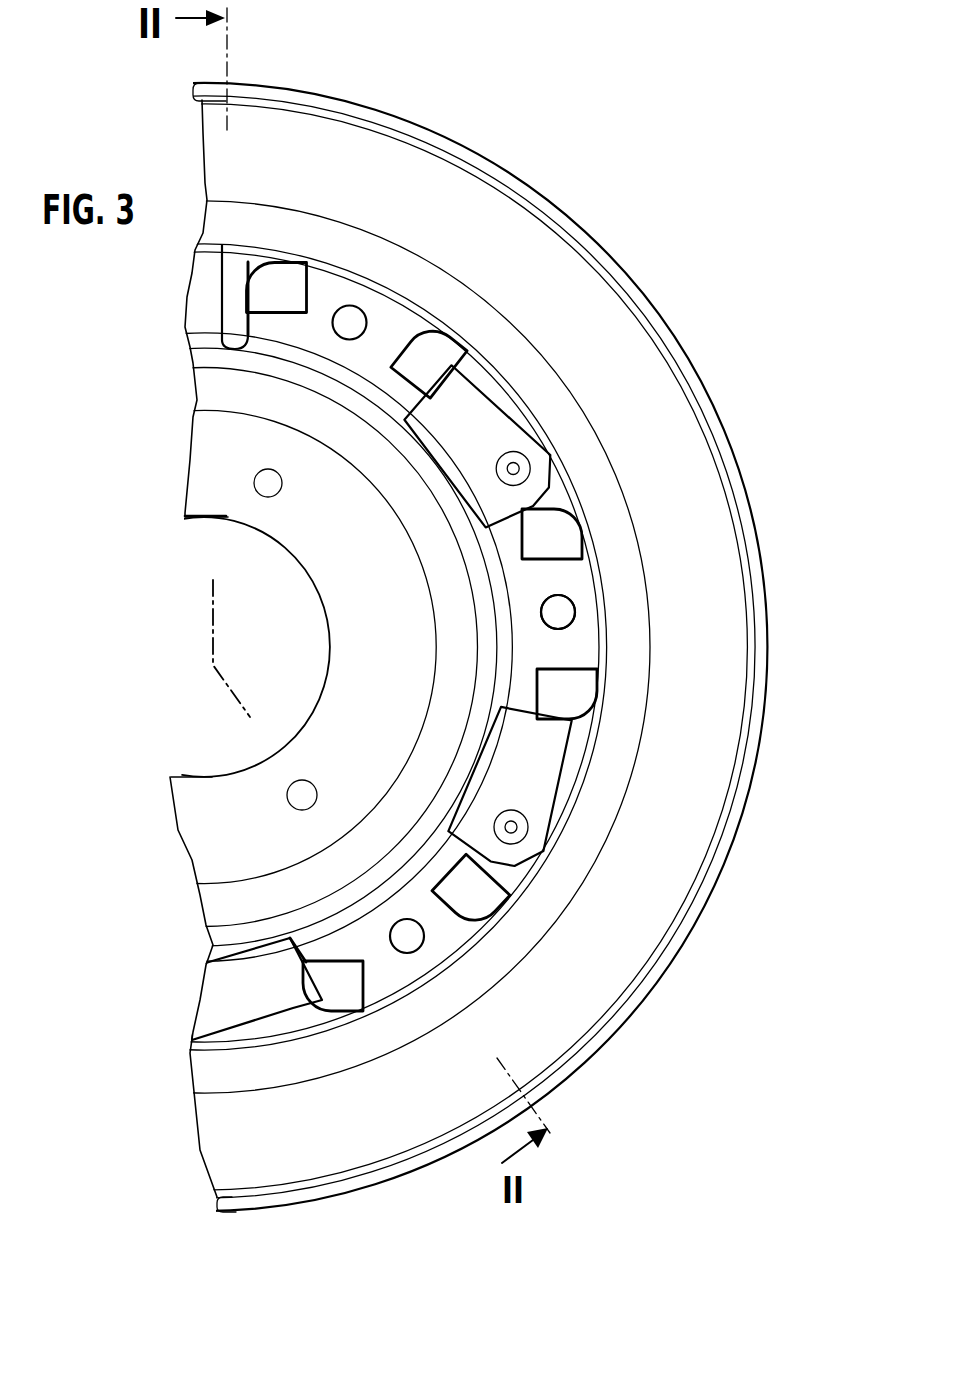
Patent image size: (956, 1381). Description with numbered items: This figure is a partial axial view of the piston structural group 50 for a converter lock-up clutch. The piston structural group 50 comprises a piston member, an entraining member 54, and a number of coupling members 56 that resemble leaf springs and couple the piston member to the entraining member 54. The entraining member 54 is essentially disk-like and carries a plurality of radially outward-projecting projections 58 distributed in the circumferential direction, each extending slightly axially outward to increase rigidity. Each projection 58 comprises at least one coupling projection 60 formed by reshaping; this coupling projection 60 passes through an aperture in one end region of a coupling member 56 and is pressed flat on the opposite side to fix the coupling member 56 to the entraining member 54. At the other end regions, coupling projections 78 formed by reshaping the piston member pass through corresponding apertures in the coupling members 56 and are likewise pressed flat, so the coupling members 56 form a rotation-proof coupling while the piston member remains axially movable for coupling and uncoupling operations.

The piston structural group 50 is at (674, 258).
The entraining member 54 is at (233, 833).
The coupling member 56 is at (533, 803).
The projection 58 is at (350, 293).
The coupling projection 60 is at (567, 618).
The coupling projection 78 is at (510, 829).